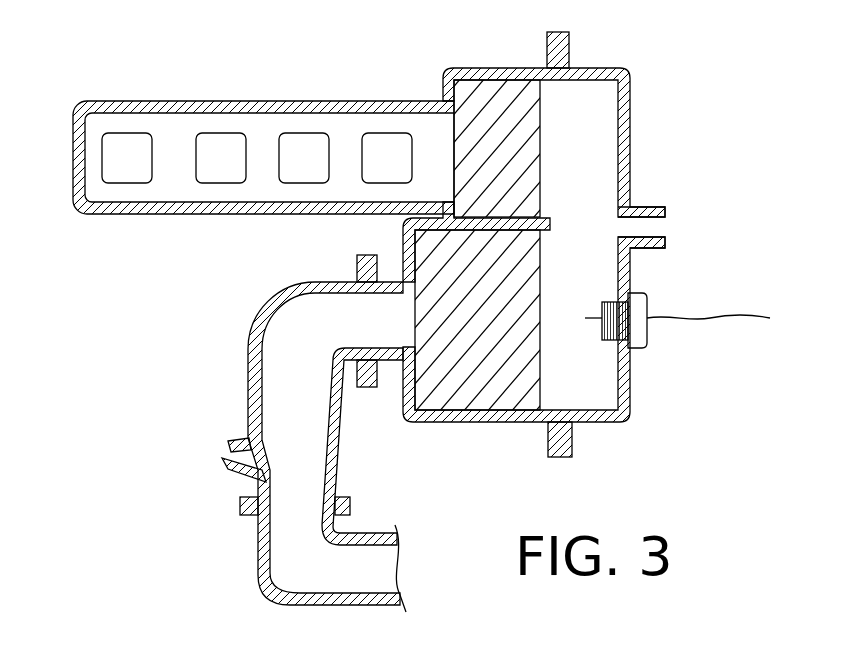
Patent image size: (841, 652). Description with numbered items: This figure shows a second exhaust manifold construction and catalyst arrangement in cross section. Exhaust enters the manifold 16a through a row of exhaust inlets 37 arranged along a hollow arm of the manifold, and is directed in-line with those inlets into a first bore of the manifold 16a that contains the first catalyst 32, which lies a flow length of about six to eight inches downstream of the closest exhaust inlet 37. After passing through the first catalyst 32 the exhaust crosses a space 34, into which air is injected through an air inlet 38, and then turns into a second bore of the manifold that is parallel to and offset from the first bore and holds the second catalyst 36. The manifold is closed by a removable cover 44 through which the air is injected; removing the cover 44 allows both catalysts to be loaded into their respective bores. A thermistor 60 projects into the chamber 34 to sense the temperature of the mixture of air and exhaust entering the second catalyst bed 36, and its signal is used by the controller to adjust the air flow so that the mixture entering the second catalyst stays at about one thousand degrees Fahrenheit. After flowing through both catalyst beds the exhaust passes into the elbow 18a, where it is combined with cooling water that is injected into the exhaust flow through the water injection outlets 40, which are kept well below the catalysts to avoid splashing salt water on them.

The manifold 16a is at (177, 102).
The exhaust inlets 37 is at (385, 130).
The first catalyst bed 32 is at (495, 105).
The removable cover 44 is at (630, 117).
The space 34 is at (592, 177).
The air inlet 38 is at (648, 207).
The thermistor 60 is at (595, 318).
The second catalyst bed 36 is at (475, 370).
The elbow 18a is at (263, 318).
The water injection outlets 40 is at (238, 437).